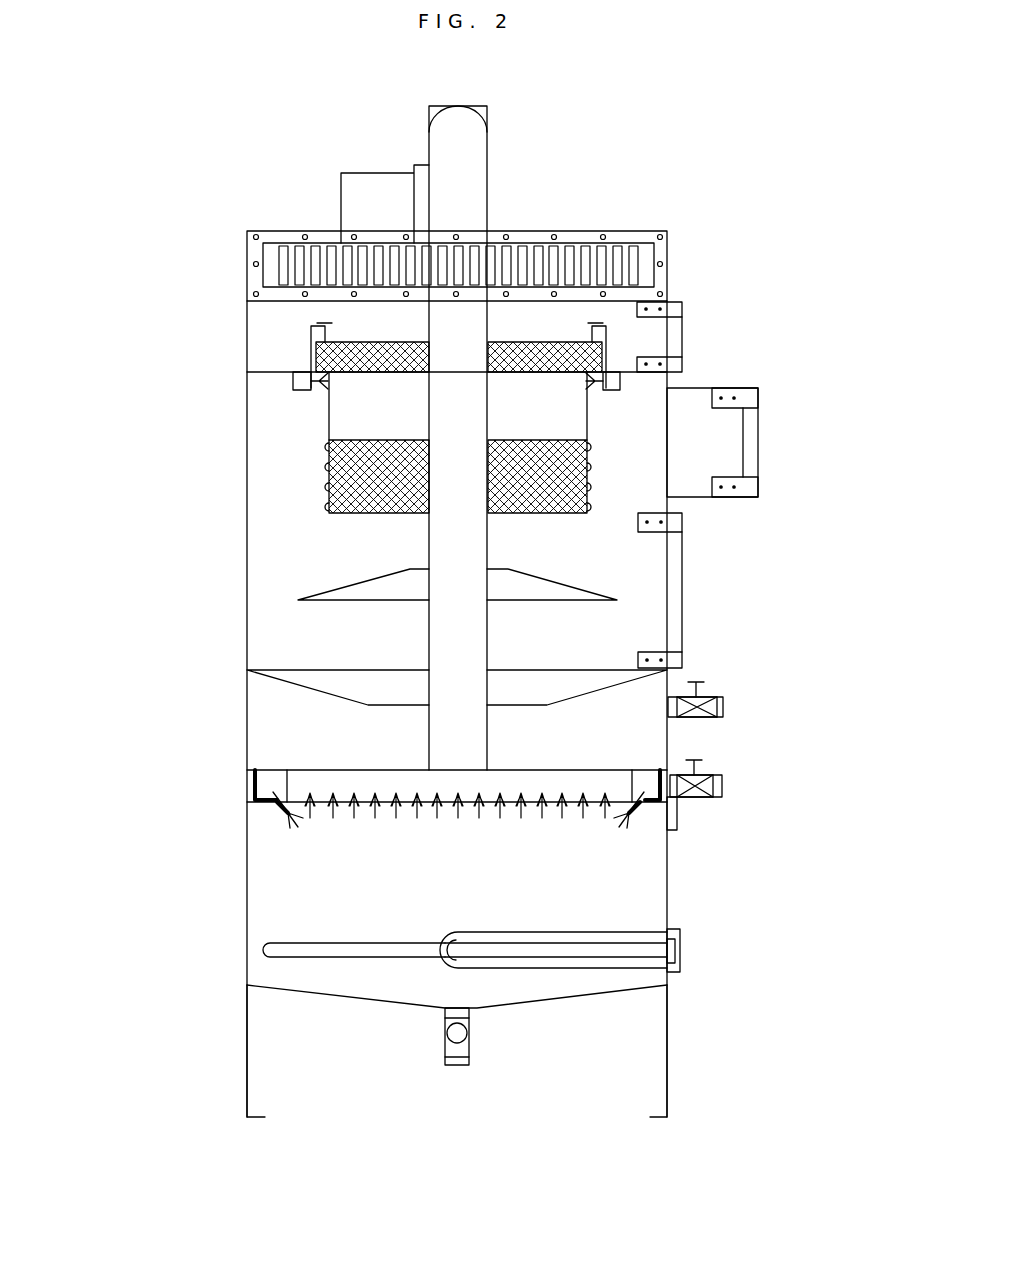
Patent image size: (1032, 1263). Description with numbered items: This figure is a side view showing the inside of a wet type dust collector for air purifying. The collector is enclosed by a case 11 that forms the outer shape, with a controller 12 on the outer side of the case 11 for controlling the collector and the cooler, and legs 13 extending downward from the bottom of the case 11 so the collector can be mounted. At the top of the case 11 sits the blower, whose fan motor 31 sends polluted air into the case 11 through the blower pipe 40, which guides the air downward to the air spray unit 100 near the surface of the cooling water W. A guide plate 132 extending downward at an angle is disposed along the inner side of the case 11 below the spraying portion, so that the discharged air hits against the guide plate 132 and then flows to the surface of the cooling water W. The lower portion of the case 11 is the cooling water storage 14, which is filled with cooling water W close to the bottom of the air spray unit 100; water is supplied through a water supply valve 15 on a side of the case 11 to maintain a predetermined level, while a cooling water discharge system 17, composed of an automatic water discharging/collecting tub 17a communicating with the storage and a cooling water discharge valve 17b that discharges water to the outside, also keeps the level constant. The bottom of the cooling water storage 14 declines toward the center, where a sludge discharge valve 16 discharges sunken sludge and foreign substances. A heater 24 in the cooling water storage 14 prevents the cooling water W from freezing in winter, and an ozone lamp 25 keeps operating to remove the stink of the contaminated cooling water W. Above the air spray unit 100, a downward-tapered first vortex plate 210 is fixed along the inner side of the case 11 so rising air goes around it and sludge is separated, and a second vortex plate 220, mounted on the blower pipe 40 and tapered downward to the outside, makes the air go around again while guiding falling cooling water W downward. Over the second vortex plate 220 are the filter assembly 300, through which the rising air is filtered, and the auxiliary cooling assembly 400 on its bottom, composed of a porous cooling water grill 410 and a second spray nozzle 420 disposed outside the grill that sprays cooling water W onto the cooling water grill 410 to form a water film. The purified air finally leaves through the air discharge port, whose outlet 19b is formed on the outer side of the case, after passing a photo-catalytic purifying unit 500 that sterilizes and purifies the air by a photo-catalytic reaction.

The case 11 is at (247, 497).
The controller 12 is at (758, 448).
The legs 13 is at (247, 1040).
The cooling water storage 14 is at (237, 810).
The water supply valve 15 is at (732, 703).
The sludge discharge valve 16 is at (486, 1040).
The cooling water discharge system 17 is at (784, 802).
The automatic water discharging/collecting tub 17a is at (672, 822).
The cooling water discharge valve 17b is at (722, 786).
The outlet 19b is at (268, 265).
The heater 24 is at (645, 963).
The ozone lamp 25 is at (358, 950).
The fan motor 31 is at (366, 183).
The blower pipe 40 is at (484, 537).
The air spray unit 100 is at (580, 760).
The guide plate 132 is at (255, 806).
The first vortex plate 210 is at (290, 678).
The second vortex plate 220 is at (330, 593).
The filter assembly 300 is at (575, 340).
The auxiliary cooling assembly 400 is at (329, 442).
The cooling water grill 410 is at (329, 424).
The second spray nozzle 420 is at (293, 380).
The photo-catalytic purifying unit 500 is at (540, 244).
The cooling water W is at (665, 890).